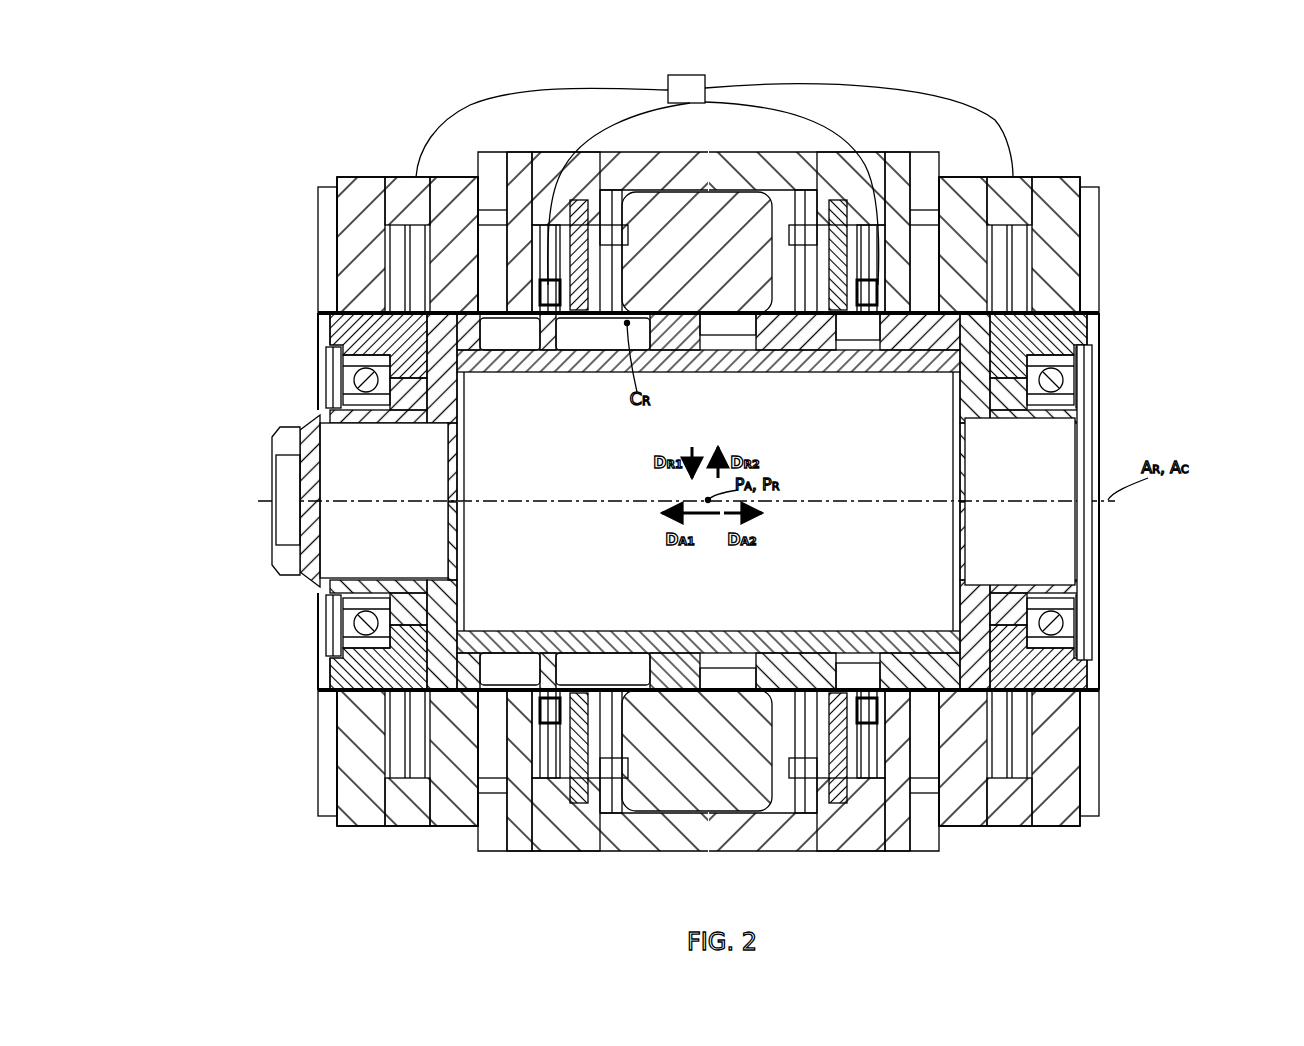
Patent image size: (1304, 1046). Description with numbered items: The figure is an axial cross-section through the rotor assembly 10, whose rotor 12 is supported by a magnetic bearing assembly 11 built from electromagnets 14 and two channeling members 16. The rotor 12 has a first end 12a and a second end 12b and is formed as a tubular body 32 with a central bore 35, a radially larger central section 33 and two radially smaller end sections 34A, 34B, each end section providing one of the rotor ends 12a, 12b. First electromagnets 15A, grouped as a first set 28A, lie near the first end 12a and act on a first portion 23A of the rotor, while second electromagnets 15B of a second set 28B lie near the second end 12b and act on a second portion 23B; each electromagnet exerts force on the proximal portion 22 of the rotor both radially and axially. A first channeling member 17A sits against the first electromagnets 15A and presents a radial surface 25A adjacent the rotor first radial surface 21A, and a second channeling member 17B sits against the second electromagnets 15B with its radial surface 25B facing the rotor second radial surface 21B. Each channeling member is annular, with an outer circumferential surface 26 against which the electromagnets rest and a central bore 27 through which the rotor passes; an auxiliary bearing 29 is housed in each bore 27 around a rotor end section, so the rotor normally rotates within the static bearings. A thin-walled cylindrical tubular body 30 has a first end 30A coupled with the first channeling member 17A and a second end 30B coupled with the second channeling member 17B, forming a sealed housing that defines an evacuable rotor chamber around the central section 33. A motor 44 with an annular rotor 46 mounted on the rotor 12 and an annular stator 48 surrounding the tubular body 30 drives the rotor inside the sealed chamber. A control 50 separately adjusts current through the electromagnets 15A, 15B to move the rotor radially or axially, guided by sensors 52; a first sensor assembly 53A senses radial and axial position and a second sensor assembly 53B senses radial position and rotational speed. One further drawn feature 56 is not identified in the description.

The rotor assembly 10 is at (262, 107).
The magnetic bearing assembly 11 is at (1175, 200).
The rotor 12 is at (262, 558).
The rotor first end 12a is at (275, 432).
The rotor second end 12b is at (1085, 407).
The electromagnet 14 is at (352, 147).
The first electromagnet 15A is at (347, 172).
The second electromagnet 15B is at (1068, 172).
The channeling member 16 is at (1110, 352).
The first channeling member 17A is at (325, 330).
The second channeling member 17B is at (1100, 670).
The rotor first radial surface 21A is at (480, 326).
The rotor second radial surface 21B is at (1080, 327).
The proximal portion of the rotor 22 is at (470, 343).
The first portion of the rotor 23A is at (455, 648).
The second portion of the rotor 23B is at (962, 668).
The radial surface of the first channeling member 25A is at (470, 350).
The radial surface of the second channeling member 25B is at (975, 372).
The outer circumferential surface 26 is at (365, 305).
The central bore 27 is at (418, 395).
The first set of electromagnets 28A is at (300, 245).
The second set of electromagnets 28B is at (1140, 258).
The auxiliary bearing 29 is at (366, 402).
The tubular body 30 is at (795, 306).
The first end of the tubular body 30A is at (415, 300).
The second end of the tubular body 30B is at (1012, 303).
The rotor tubular body 32 is at (300, 405).
The central section 33 is at (740, 356).
The first end section 34A is at (382, 590).
The second end section 34B is at (1022, 590).
The central bore 35 is at (593, 567).
The motor 44 is at (655, 190).
The motor rotor 46 is at (706, 347).
The stator 48 is at (752, 235).
The control 50 is at (690, 76).
The sensor 52 is at (560, 322).
The first sensor assembly 53A is at (565, 292).
The second sensor assembly 53B is at (875, 320).
The rotor groove 56 is at (583, 347).